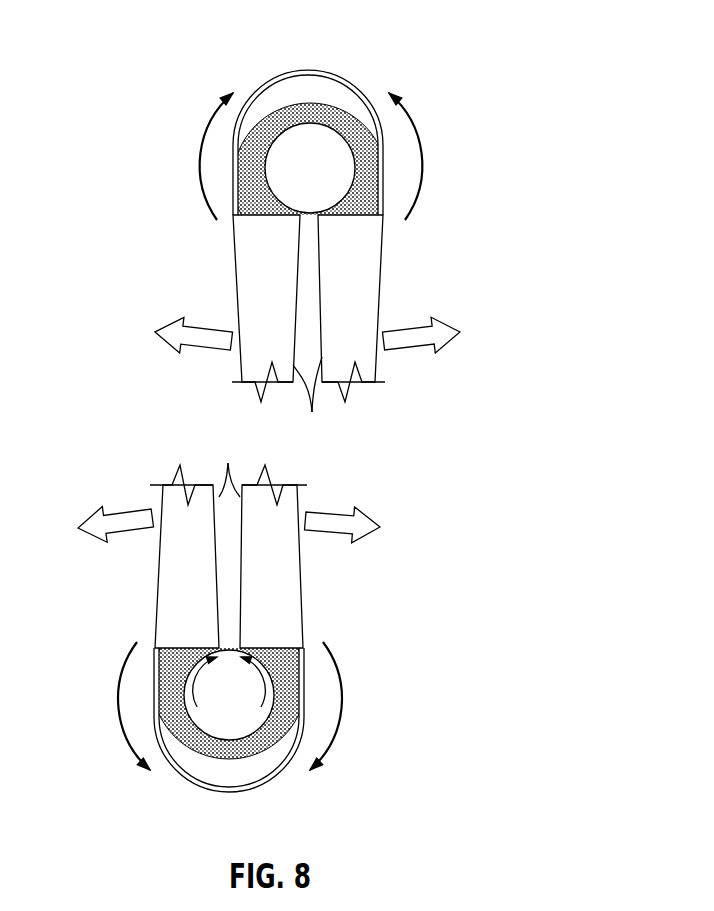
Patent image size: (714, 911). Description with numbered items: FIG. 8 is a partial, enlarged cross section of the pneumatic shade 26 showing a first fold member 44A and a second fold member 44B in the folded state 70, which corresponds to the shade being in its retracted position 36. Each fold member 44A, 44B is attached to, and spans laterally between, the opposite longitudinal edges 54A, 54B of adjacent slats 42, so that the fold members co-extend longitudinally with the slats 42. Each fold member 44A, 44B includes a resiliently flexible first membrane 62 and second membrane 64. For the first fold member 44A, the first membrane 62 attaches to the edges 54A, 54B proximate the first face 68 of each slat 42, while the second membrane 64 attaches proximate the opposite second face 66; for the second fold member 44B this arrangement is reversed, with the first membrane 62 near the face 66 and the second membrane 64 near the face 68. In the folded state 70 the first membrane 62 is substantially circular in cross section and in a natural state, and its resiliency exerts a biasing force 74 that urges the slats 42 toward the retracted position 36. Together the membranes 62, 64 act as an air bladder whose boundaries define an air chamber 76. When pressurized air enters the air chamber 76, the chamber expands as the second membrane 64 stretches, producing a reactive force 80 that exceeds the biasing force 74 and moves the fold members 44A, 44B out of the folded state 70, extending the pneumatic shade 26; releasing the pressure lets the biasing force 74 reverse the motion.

The pneumatic shade 26 is at (548, 57).
The retracted position 36 is at (578, 95).
The slat 42 is at (270, 425).
The first fold member 44A is at (305, 69).
The second fold member 44B is at (284, 770).
The first longitudinal edge 54A is at (250, 240).
The second longitudinal edge 54B is at (368, 250).
The first membrane 62 is at (271, 145).
The second membrane 64 is at (258, 90).
The second face 66 is at (238, 318).
The first face 68 is at (120, 602).
The folded state 70 is at (273, 75).
The biasing force 74 is at (190, 687).
The air chamber 76 is at (350, 103).
The reactive force 80 is at (197, 157).